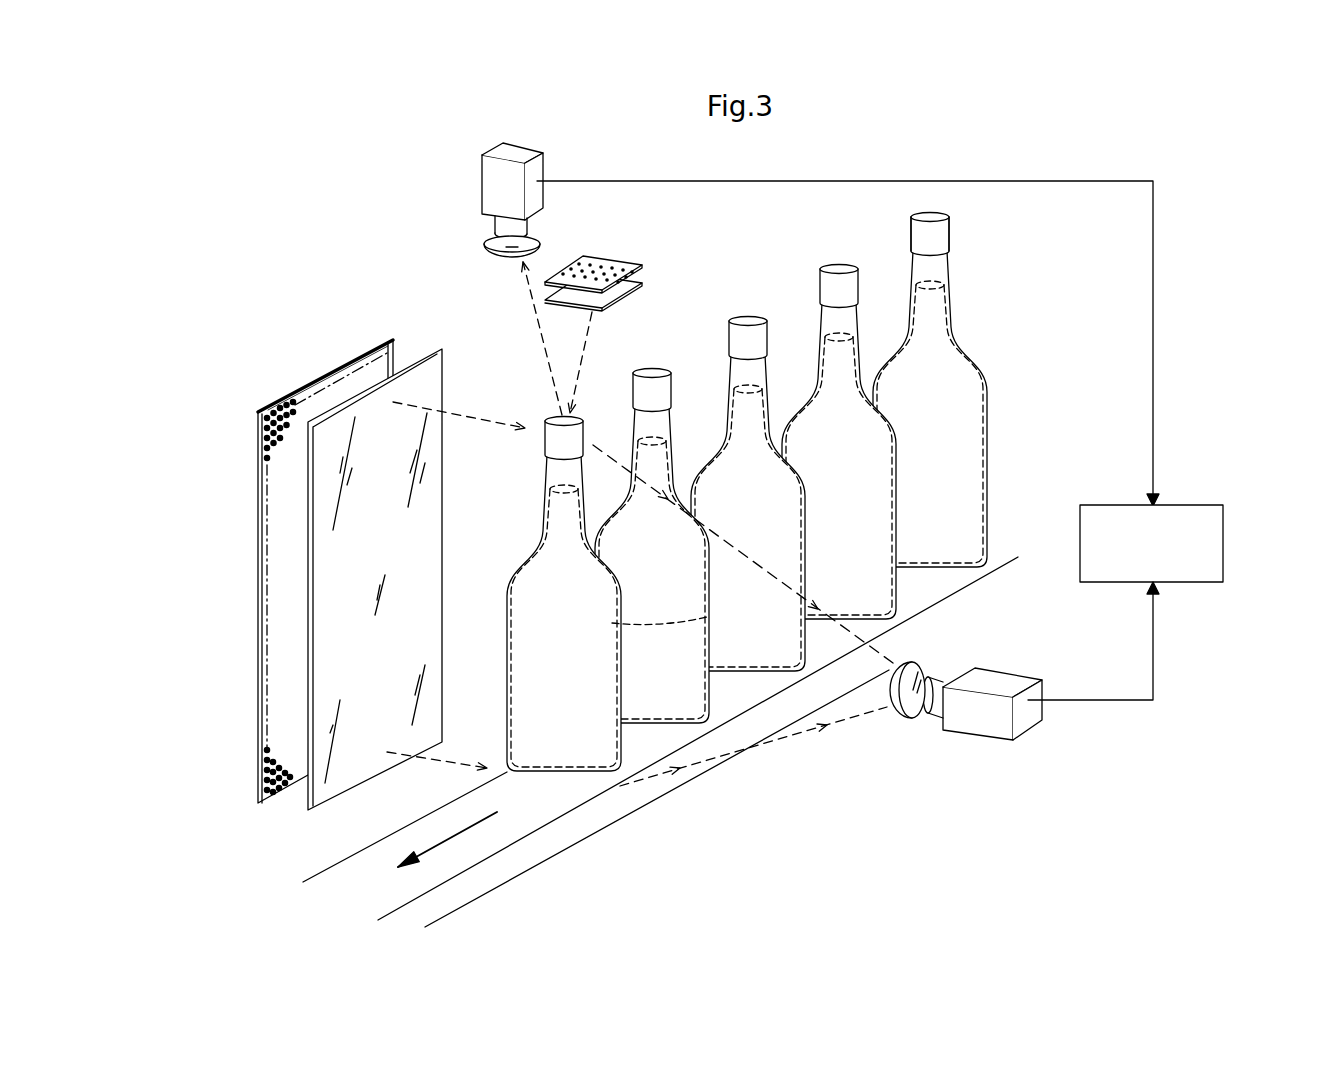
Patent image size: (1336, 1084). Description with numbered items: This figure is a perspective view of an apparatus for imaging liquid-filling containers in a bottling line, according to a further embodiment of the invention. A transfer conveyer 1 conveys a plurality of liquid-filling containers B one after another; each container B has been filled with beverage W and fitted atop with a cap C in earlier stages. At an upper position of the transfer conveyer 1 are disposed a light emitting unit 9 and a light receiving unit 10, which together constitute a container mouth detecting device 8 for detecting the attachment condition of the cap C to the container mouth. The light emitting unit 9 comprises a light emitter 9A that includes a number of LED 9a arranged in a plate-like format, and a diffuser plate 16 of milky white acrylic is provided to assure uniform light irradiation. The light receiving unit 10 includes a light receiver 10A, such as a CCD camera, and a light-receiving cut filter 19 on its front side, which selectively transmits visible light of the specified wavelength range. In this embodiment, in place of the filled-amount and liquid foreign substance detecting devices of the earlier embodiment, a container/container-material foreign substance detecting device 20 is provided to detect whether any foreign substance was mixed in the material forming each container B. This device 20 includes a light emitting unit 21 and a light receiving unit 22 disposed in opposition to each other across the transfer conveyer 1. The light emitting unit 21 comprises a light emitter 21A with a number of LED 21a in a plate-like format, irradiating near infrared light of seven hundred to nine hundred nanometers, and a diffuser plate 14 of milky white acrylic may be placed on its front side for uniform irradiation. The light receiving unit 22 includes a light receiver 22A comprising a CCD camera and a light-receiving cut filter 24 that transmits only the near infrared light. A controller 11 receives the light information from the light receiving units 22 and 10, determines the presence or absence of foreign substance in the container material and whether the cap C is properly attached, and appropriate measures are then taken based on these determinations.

The transfer conveyer 1 is at (543, 852).
The container mouth detecting device 8 is at (748, 324).
The light emitting unit 9 is at (656, 255).
The light emitter 9A is at (610, 246).
The LED 9a is at (628, 257).
The diffuser plate 16 is at (640, 285).
The light receiving unit 10 is at (748, 324).
The light receiver 10A is at (483, 170).
The light-receiving cut filter 19 is at (460, 197).
The container/container-material foreign substance detecting device 20 is at (630, 573).
The light emitting unit 21 is at (263, 573).
The light emitter 21A is at (348, 363).
The LED 21a is at (273, 447).
The diffuser plate 14 is at (437, 392).
The light receiving unit 22 is at (1003, 697).
The light receiver 22A is at (1040, 725).
The light-receiving cut filter 24 is at (910, 717).
The controller 11 is at (1223, 545).
The liquid-filling container B is at (592, 762).
The beverage W is at (698, 588).
The cap C is at (637, 393).